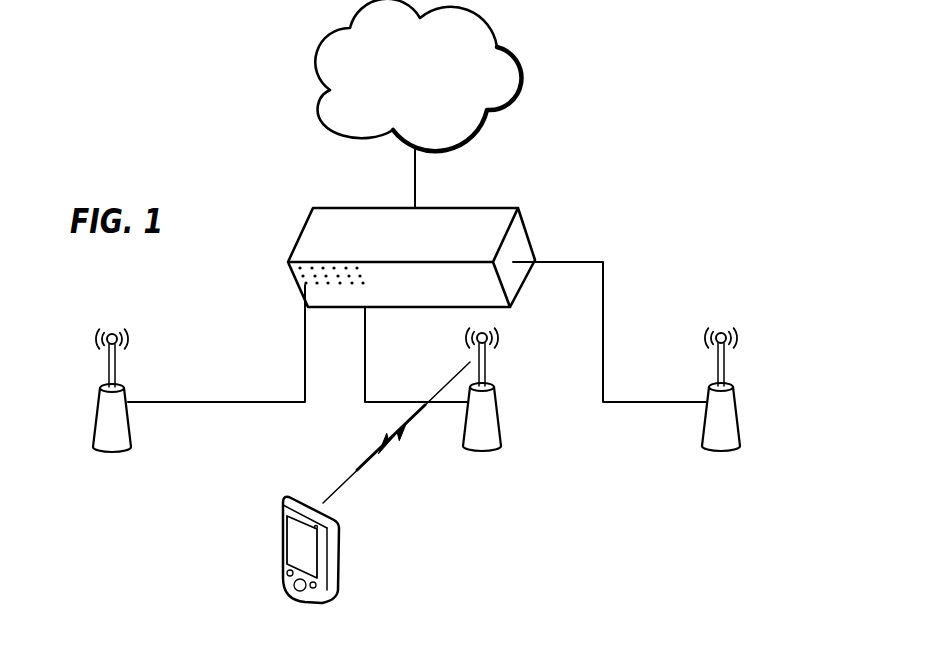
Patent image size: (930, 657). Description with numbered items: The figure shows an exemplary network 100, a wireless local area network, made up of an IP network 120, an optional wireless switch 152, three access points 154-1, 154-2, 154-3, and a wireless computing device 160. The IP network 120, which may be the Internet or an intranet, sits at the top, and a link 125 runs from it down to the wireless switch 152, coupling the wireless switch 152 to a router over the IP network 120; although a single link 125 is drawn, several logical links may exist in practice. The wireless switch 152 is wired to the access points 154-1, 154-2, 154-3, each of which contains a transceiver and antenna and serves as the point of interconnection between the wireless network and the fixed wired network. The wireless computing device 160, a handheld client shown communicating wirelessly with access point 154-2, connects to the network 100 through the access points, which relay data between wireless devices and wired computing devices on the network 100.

The network 100 is at (652, 78).
The IP network 120 is at (317, 53).
The link 125 is at (416, 185).
The wireless switch 152 is at (530, 228).
The access point 154-1 is at (128, 417).
The access point 154-2 is at (498, 418).
The access point 154-3 is at (738, 417).
The wireless computing device 160 is at (278, 520).